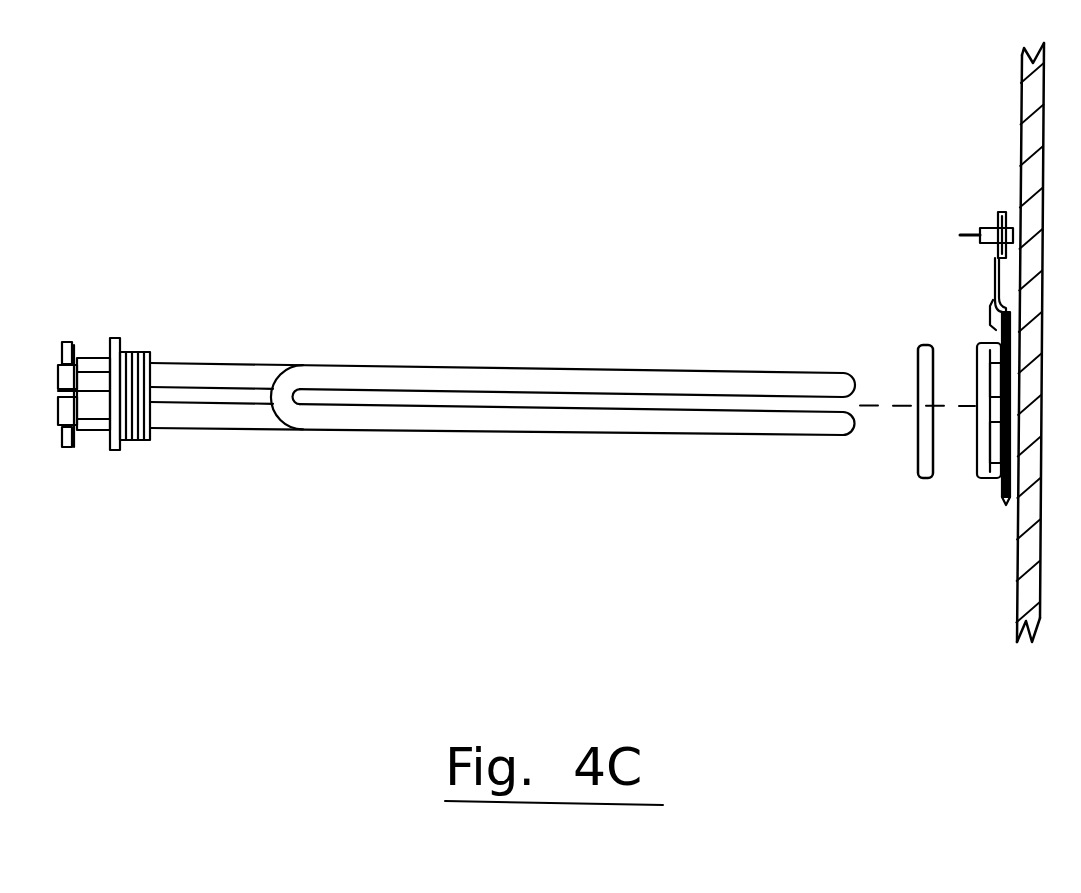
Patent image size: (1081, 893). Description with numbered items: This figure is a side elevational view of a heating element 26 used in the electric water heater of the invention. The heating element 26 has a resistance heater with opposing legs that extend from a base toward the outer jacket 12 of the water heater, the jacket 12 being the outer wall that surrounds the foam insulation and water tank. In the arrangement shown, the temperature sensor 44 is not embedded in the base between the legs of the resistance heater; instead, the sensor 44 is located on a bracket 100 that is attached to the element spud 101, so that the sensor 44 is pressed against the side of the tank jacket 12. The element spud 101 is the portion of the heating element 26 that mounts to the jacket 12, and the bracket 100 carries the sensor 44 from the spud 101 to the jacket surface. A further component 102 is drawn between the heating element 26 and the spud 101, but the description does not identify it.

The outer jacket 12 is at (996, 567).
The heating element 26 is at (222, 342).
The temperature sensor 44 is at (970, 203).
The bracket 100 is at (966, 274).
The element spud 101 is at (955, 337).
The gasket 102 is at (890, 474).